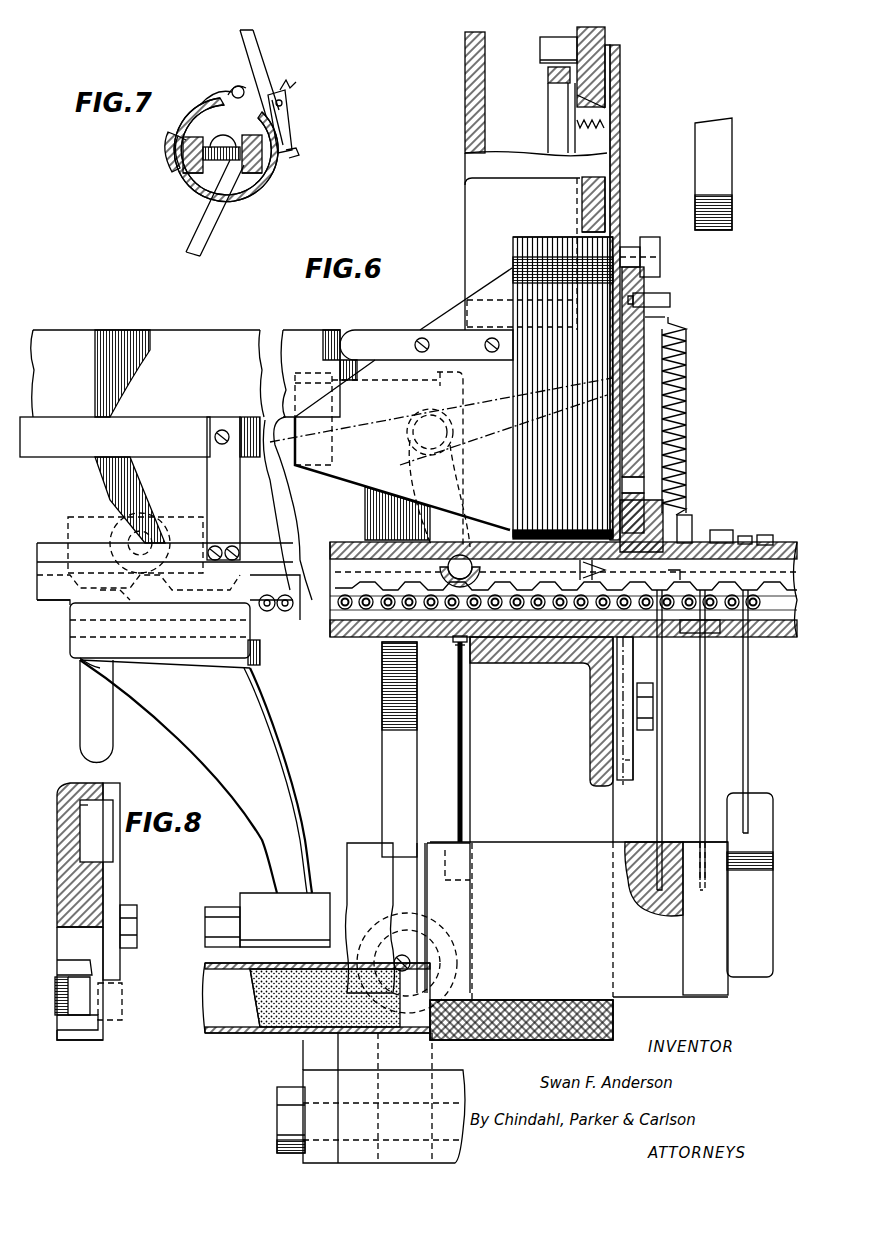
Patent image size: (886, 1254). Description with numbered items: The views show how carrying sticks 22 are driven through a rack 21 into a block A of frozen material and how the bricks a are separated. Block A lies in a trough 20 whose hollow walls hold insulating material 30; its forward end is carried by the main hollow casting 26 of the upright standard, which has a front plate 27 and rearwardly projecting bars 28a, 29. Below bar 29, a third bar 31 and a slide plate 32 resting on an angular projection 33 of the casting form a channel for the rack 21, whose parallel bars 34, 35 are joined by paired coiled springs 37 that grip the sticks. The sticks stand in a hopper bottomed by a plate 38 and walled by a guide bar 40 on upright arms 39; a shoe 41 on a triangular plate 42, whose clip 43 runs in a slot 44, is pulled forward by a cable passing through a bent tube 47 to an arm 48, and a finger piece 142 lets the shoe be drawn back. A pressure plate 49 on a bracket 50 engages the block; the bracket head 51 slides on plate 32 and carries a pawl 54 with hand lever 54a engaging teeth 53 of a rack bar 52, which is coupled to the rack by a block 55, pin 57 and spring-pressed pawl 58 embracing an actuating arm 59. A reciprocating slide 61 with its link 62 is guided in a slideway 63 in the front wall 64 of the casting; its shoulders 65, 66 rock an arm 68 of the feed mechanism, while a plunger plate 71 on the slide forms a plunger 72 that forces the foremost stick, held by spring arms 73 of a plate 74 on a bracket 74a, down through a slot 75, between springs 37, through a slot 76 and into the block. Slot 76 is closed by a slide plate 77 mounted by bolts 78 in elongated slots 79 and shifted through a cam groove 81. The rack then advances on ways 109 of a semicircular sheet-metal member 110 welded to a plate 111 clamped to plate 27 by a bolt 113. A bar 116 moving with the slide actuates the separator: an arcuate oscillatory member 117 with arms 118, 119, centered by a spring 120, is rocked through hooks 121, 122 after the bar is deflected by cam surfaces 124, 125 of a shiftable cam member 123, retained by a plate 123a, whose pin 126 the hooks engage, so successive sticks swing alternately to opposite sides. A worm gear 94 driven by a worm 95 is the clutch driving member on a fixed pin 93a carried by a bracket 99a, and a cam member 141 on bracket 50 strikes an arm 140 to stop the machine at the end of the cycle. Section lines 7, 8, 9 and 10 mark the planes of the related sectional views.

In FIG. 6, the section line for FIG. 7 is at (683, 643).
In FIG. 6, the section line for FIG. 8 is at (644, 628).
In FIG. 6, the section line for FIG. 9 is at (605, 27).
In FIG. 6, the section line for FIG. 10 is at (512, 237).
In FIG. 6, the base plate 20 is at (248, 1030).
In FIG. 6, the slide bar 21 is at (245, 620).
In FIG. 7, the rod 22 is at (196, 195).
In FIG. 6, the rod 22 is at (663, 692).
In FIG. 6, the carriage body 26 is at (466, 170).
In FIG. 6, the upright plate 27 is at (623, 118).
In FIG. 6, the frame block 28a is at (232, 332).
In FIG. 6, the frame portion 29 is at (270, 518).
In FIG. 6, the bed 30 is at (285, 1028).
In FIG. 6, the guide block 31 is at (38, 596).
In FIG. 8, the pin 32 is at (103, 1040).
In FIG. 6, the pin head 33 is at (456, 660).
In FIG. 7, the nut 34 is at (247, 166).
In FIG. 6, the nut 34 is at (293, 618).
In FIG. 8, the nut 34 is at (98, 1028).
In FIG. 7, the nut 35 is at (183, 160).
In FIG. 6, the nut 35 is at (764, 590).
In FIG. 8, the nut 35 is at (62, 960).
In FIG. 7, the bolt / ball 37 is at (215, 162).
In FIG. 6, the bolt / ball 37 is at (745, 592).
In FIG. 8, the bolt / ball 37 is at (55, 998).
In FIG. 6, the wedge block 38 is at (345, 548).
In FIG. 6, the vertical bar 39 is at (206, 483).
In FIG. 6, the horizontal bar 40 is at (176, 450).
In FIG. 6, the comb bar 41 is at (510, 280).
In FIG. 6, the lever 42 is at (452, 320).
In FIG. 6, the recess 43 is at (333, 440).
In FIG. 6, the block 44 is at (262, 448).
In FIG. 6, the pocket 47 is at (442, 392).
In FIG. 6, the recess 48 is at (333, 398).
In FIG. 6, the arm 49 is at (340, 860).
In FIG. 6, the lever 50 is at (275, 712).
In FIG. 6, the pivot 51 is at (78, 660).
In FIG. 6, the cam plate 52 is at (38, 578).
In FIG. 6, the cam 53 is at (106, 589).
In FIG. 6, the cam housing 54 is at (80, 517).
In FIG. 6, the hanging tab 54a is at (80, 690).
In FIG. 6, the retainer 55 is at (488, 572).
In FIG. 6, the bearing 57 is at (440, 570).
In FIG. 6, the pawl 58 is at (608, 580).
In FIG. 6, the cam slot 59 is at (470, 505).
In FIG. 6, the head block 61 is at (598, 80).
In FIG. 6, the column 62 is at (551, 129).
In FIG. 8, the housing 63 is at (80, 810).
In FIG. 8, the body 64 is at (100, 885).
In FIG. 6, the spring 65 is at (590, 102).
In FIG. 6, the section line 66 is at (616, 384).
In FIG. 6, the pin 68 is at (510, 441).
In FIG. 6, the plate 71 is at (615, 102).
In FIG. 6, the plate 72 is at (612, 208).
In FIG. 6, the bracket 73 is at (632, 322).
In FIG. 6, the block 74 is at (608, 195).
In FIG. 6, the block edge 74a is at (583, 202).
In FIG. 6, the pin 75 is at (600, 570).
In FIG. 6, the plate 76 is at (625, 660).
In FIG. 8, the plate 76 is at (122, 993).
In FIG. 6, the plate 77 is at (632, 772).
In FIG. 8, the plate 77 is at (120, 869).
In FIG. 6, the bolt 78 is at (655, 709).
In FIG. 8, the bolt 78 is at (128, 908).
In FIG. 6, the roller 79 is at (410, 424).
In FIG. 6, the pocket 81 is at (631, 757).
In FIG. 8, the pocket 81 is at (112, 852).
In FIG. 6, the bolt 93a is at (278, 1100).
In FIG. 6, the housing 94 is at (384, 1098).
In FIG. 6, the disc 95 is at (458, 950).
In FIG. 6, the plate 99a is at (340, 1058).
In FIG. 7, the rail 109 is at (190, 176).
In FIG. 6, the rail 109 is at (785, 618).
In FIG. 7, the bolt 110 is at (218, 136).
In FIG. 6, the bolt 110 is at (760, 535).
In FIG. 6, the bolt 111 is at (660, 300).
In FIG. 6, the bolt 113 is at (650, 270).
In FIG. 7, the arm 116 is at (288, 116).
In FIG. 6, the arm 116 is at (697, 143).
In FIG. 7, the link 117 is at (287, 132).
In FIG. 6, the link 117 is at (693, 570).
In FIG. 7, the bracket 118 is at (172, 150).
In FIG. 6, the bracket 118 is at (718, 633).
In FIG. 7, the ring 119 is at (224, 200).
In FIG. 7, the spring 120 is at (290, 90).
In FIG. 6, the spring 120 is at (680, 330).
In FIG. 7, the pivot pin 121 is at (234, 88).
In FIG. 7, the hook 122 is at (296, 150).
In FIG. 7, the block 123 is at (170, 123).
In FIG. 6, the block 123 is at (730, 528).
In FIG. 6, the block 123a is at (761, 519).
In FIG. 7, the lug 124 is at (206, 97).
In FIG. 7, the arm 125 is at (258, 68).
In FIG. 7, the post 126 is at (228, 88).
In FIG. 6, the post 126 is at (710, 522).
In FIG. 6, the column 140 is at (382, 797).
In FIG. 6, the stop 141 is at (262, 668).
In FIG. 6, the bar 142 is at (392, 334).
In FIG. 6, the block a is at (770, 833).
In FIG. 6, the section line A is at (552, 842).